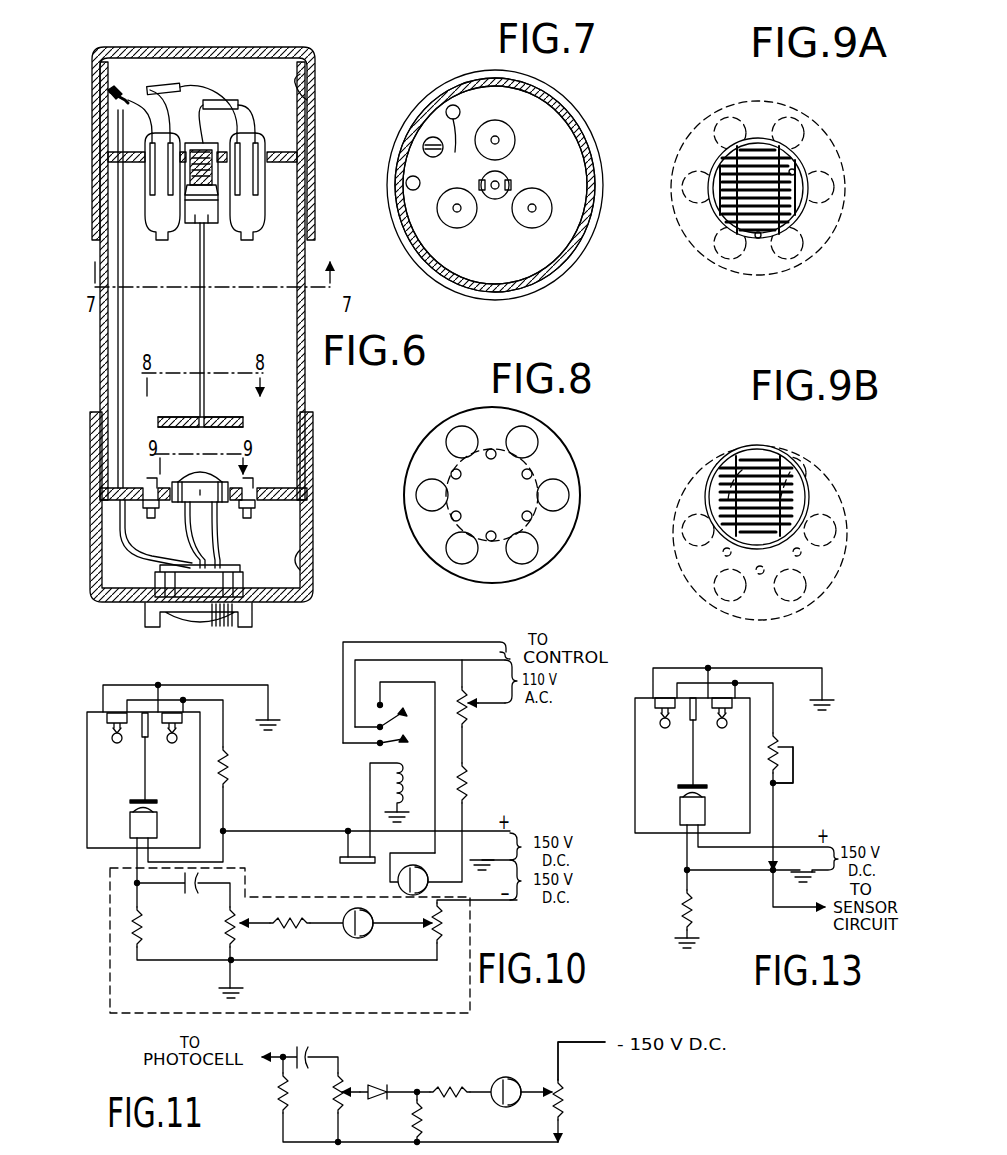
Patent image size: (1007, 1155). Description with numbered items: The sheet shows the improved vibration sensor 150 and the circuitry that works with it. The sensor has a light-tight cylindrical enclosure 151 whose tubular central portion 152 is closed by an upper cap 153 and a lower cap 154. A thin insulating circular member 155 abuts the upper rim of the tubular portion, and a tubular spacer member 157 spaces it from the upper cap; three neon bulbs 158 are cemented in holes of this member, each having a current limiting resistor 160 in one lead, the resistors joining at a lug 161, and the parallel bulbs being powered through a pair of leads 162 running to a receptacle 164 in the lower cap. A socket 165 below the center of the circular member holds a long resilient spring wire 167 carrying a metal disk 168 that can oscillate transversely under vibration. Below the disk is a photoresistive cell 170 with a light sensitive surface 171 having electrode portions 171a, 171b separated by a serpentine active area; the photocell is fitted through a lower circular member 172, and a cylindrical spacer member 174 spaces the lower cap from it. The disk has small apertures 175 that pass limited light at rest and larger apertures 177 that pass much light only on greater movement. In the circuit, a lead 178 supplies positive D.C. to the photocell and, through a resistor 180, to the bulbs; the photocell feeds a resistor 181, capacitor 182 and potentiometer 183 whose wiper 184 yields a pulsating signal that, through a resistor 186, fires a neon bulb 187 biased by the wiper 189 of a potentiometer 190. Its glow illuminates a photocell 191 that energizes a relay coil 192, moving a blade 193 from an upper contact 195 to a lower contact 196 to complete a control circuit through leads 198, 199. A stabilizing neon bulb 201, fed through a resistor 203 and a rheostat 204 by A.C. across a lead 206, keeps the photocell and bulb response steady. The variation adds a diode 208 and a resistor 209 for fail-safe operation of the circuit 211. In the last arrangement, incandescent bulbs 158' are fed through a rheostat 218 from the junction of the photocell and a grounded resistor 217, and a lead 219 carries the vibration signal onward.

In FIG. 6, the vibration sensor 150 is at (318, 383).
In FIG. 10, the vibration sensor 150 is at (74, 776).
In FIG. 13, the vibration sensor 150 is at (622, 752).
In FIG. 6, the cylindrical enclosure 151 is at (318, 473).
In FIG. 10, the cylindrical enclosure 151 is at (86, 817).
In FIG. 13, the cylindrical enclosure 151 is at (632, 793).
In FIG. 6, the tubular central portion 152 is at (305, 316).
In FIG. 7, the tubular central portion 152 is at (528, 283).
In FIG. 6, the upper cap 153 is at (262, 47).
In FIG. 7, the upper cap 153 is at (575, 263).
In FIG. 6, the lower cap 154 is at (292, 612).
In FIG. 6, the circular member 155 is at (292, 148).
In FIG. 7, the circular member 155 is at (493, 270).
In FIG. 6, the tubular spacer member 157 is at (300, 90).
In FIG. 6, the neon bulbs 158 is at (201, 198).
In FIG. 7, the neon bulbs 158 is at (500, 174).
In FIG. 10, the neon bulbs 158 is at (145, 742).
In FIG. 13, the bulbs 158' is at (694, 730).
In FIG. 6, the current limiting resistor 160 is at (160, 86).
In FIG. 6, the lug 161 is at (110, 92).
In FIG. 6, the leads 162 is at (126, 342).
In FIG. 7, the leads 162 is at (420, 183).
In FIG. 6, the receptacle 164 is at (165, 575).
In FIG. 6, the socket 165 is at (196, 224).
In FIG. 7, the socket 165 is at (495, 200).
In FIG. 6, the spring wire 167 is at (206, 320).
In FIG. 7, the spring wire 167 is at (498, 190).
In FIG. 10, the spring wire 167 is at (144, 776).
In FIG. 13, the spring wire 167 is at (690, 770).
In FIG. 6, the metal disk 168 is at (244, 423).
In FIG. 8, the metal disk 168 is at (576, 527).
In FIG. 9B, the metal disk 168 is at (816, 597).
In FIG. 10, the metal disk 168 is at (148, 800).
In FIG. 13, the metal disk 168 is at (706, 786).
In FIG. 6, the photoresistive cell 170 is at (232, 486).
In FIG. 9A, the photoresistive cell 170 is at (760, 238).
In FIG. 9B, the photoresistive cell 170 is at (810, 500).
In FIG. 10, the photoresistive cell 170 is at (130, 824).
In FIG. 13, the photoresistive cell 170 is at (680, 812).
In FIG. 6, the light sensitive surface 171 is at (216, 480).
In FIG. 8, the light sensitive surface 171 is at (491, 545).
In FIG. 9A, the light sensitive surface 171 is at (722, 200).
In FIG. 9B, the light sensitive surface 171 is at (722, 530).
In FIG. 10, the light sensitive surface 171 is at (150, 808).
In FIG. 13, the light sensitive surface 171 is at (702, 793).
In FIG. 9A, the electrode portion 171a is at (720, 180).
In FIG. 9A, the electrode portion 171b is at (795, 190).
In FIG. 6, the circular member 172 is at (302, 538).
In FIG. 6, the cylindrical spacer member 174 is at (302, 572).
In FIG. 8, the small apertures 175 is at (522, 474).
In FIG. 9A, the small apertures 175 is at (805, 232).
In FIG. 9B, the small apertures 175 is at (727, 505).
In FIG. 8, the large apertures 177 is at (460, 432).
In FIG. 9A, the large apertures 177 is at (830, 175).
In FIG. 9B, the large apertures 177 is at (728, 458).
In FIG. 10, the lead 178 is at (275, 831).
In FIG. 10, the current-limiting resistor 180 is at (228, 770).
In FIG. 10, the resistor 181 is at (141, 907).
In FIG. 11, the resistor 181 is at (278, 1110).
In FIG. 10, the capacitor 182 is at (193, 895).
In FIG. 11, the capacitor 182 is at (301, 1050).
In FIG. 10, the potentiometer 183 is at (228, 930).
In FIG. 11, the potentiometer 183 is at (335, 1100).
In FIG. 10, the wiper 184 is at (248, 928).
In FIG. 11, the wiper 184 is at (350, 1088).
In FIG. 10, the current-limiting resistor 186 is at (290, 928).
In FIG. 11, the current-limiting resistor 186 is at (462, 1085).
In FIG. 10, the neon bulb 187 is at (360, 938).
In FIG. 11, the neon bulb 187 is at (545, 1058).
In FIG. 10, the wiper 189 is at (430, 920).
In FIG. 11, the wiper 189 is at (548, 1097).
In FIG. 10, the potentiometer 190 is at (443, 923).
In FIG. 11, the potentiometer 190 is at (566, 1095).
In FIG. 10, the photocell 191 is at (345, 863).
In FIG. 10, the relay coil 192 is at (390, 790).
In FIG. 10, the relay blade 193 is at (392, 716).
In FIG. 10, the upper contact 195 is at (386, 705).
In FIG. 10, the lower contact 196 is at (378, 744).
In FIG. 10, the lead 198 is at (393, 642).
In FIG. 10, the lead 199 is at (460, 660).
In FIG. 10, the neon bulb 201 is at (418, 868).
In FIG. 10, the resistor 203 is at (470, 785).
In FIG. 10, the rheostat 204 is at (468, 715).
In FIG. 10, the lead 206 is at (490, 705).
In FIG. 11, the diode 208 is at (387, 1085).
In FIG. 11, the resistor 209 is at (412, 1115).
In FIG. 11, the circuit 211 is at (755, 1153).
In FIG. 13, the resistor 217 is at (692, 922).
In FIG. 13, the rheostat 218 is at (793, 744).
In FIG. 13, the lead 219 is at (782, 908).